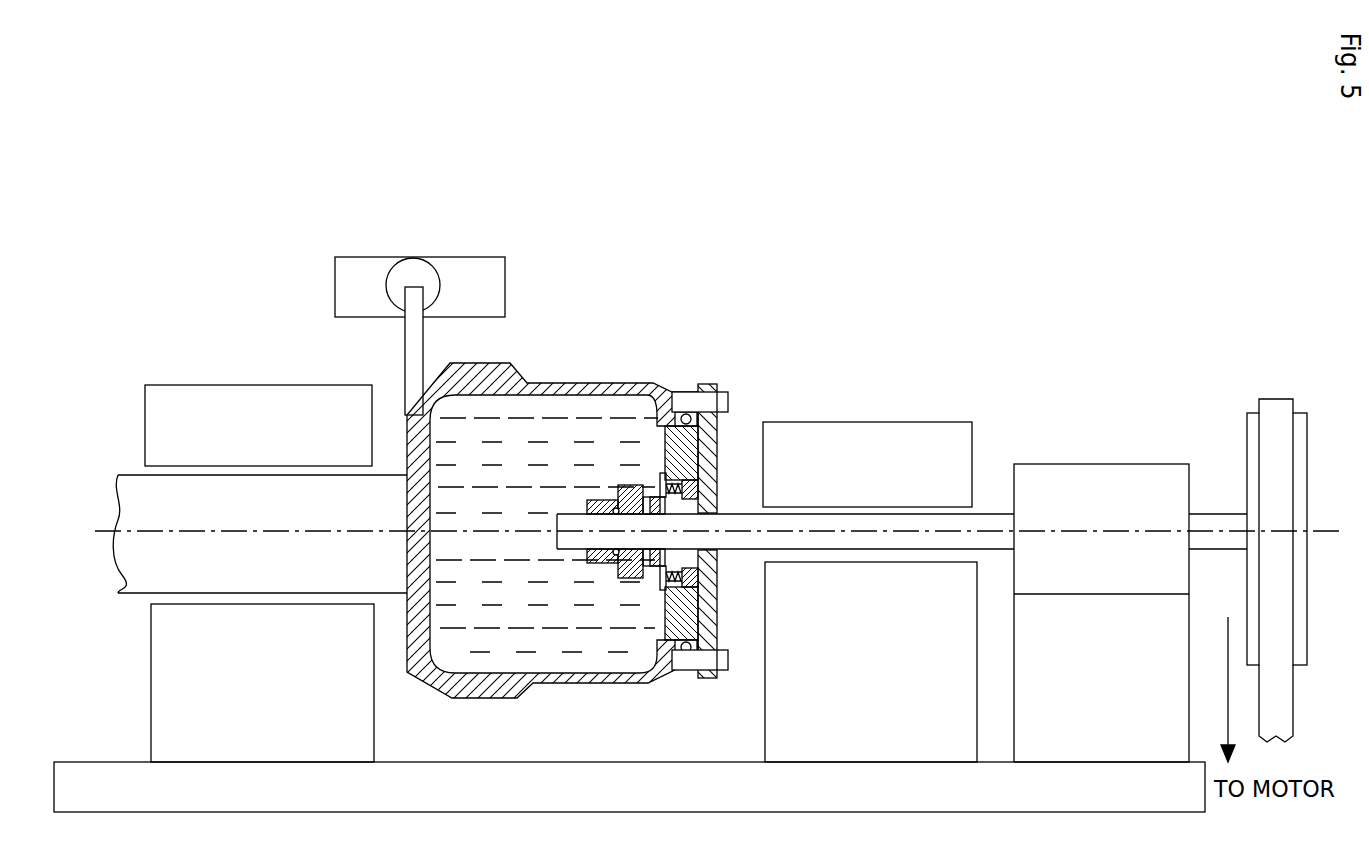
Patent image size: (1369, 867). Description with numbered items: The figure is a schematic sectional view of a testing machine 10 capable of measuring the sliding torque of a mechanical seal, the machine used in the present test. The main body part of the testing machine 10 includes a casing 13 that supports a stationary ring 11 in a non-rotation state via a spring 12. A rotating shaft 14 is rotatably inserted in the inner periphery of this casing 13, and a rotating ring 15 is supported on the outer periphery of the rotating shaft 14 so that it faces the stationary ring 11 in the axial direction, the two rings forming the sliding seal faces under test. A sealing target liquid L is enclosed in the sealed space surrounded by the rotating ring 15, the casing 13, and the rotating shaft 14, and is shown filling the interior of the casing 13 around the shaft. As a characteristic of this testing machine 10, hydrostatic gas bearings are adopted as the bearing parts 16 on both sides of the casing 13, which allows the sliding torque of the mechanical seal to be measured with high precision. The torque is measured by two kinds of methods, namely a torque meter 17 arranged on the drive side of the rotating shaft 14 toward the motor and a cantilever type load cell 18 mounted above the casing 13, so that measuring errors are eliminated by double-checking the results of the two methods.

The testing machine 10 is at (791, 229).
The stationary ring 11 is at (662, 572).
The spring 12 is at (663, 598).
The casing 13 is at (706, 678).
The rotating shaft 14 is at (752, 523).
The rotating ring 15 is at (620, 569).
The bearing parts 16 is at (280, 402).
The torque meter 17 is at (1113, 462).
The cantilever type load cell 18 is at (428, 257).
The sealing target liquid L is at (535, 457).